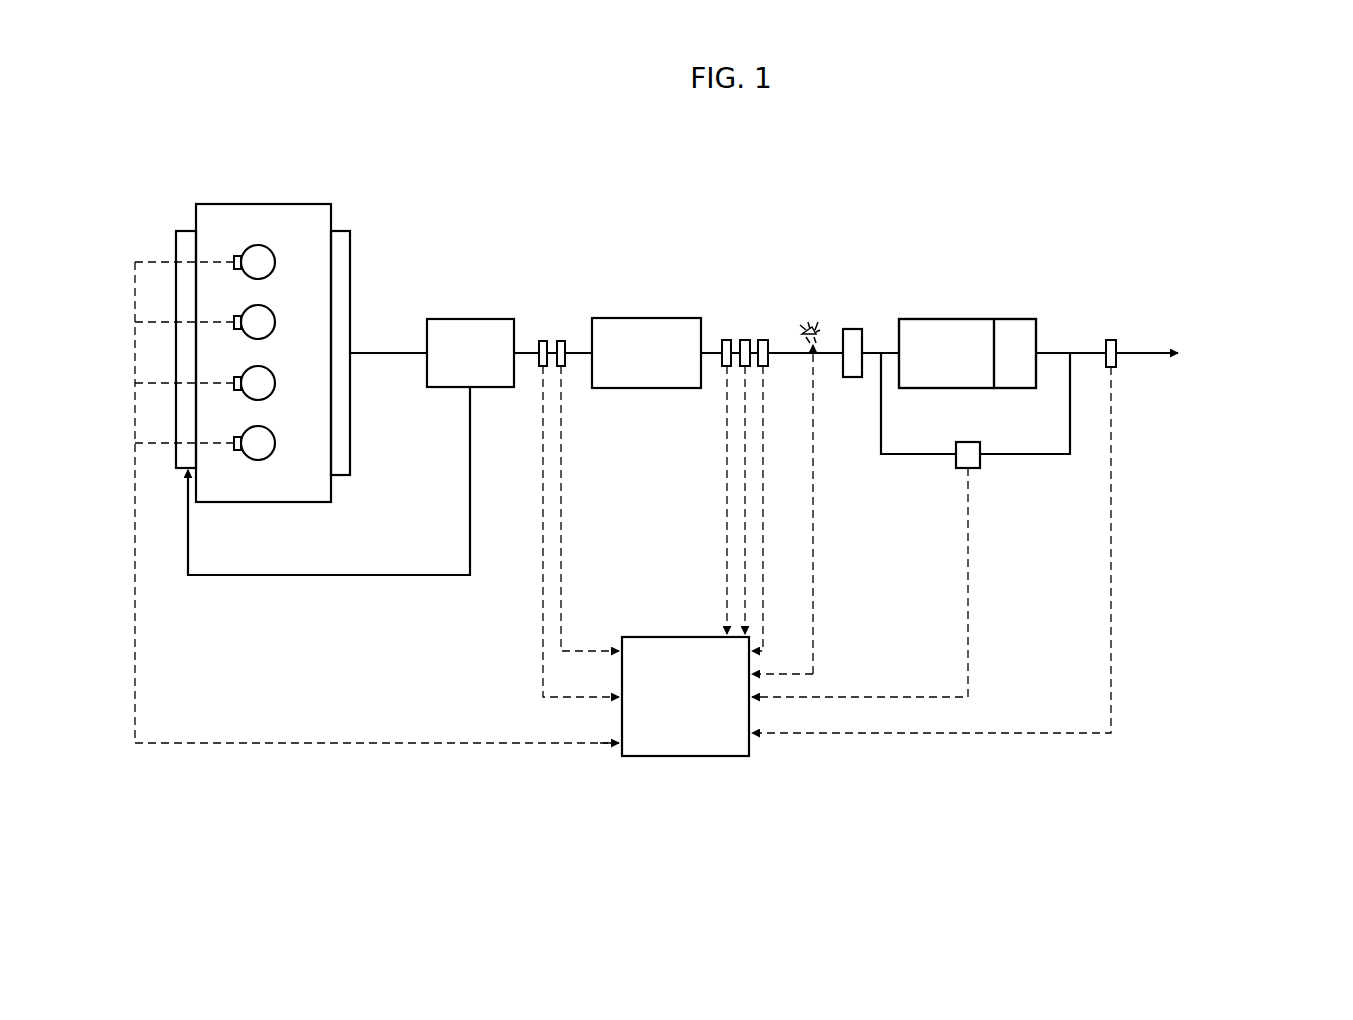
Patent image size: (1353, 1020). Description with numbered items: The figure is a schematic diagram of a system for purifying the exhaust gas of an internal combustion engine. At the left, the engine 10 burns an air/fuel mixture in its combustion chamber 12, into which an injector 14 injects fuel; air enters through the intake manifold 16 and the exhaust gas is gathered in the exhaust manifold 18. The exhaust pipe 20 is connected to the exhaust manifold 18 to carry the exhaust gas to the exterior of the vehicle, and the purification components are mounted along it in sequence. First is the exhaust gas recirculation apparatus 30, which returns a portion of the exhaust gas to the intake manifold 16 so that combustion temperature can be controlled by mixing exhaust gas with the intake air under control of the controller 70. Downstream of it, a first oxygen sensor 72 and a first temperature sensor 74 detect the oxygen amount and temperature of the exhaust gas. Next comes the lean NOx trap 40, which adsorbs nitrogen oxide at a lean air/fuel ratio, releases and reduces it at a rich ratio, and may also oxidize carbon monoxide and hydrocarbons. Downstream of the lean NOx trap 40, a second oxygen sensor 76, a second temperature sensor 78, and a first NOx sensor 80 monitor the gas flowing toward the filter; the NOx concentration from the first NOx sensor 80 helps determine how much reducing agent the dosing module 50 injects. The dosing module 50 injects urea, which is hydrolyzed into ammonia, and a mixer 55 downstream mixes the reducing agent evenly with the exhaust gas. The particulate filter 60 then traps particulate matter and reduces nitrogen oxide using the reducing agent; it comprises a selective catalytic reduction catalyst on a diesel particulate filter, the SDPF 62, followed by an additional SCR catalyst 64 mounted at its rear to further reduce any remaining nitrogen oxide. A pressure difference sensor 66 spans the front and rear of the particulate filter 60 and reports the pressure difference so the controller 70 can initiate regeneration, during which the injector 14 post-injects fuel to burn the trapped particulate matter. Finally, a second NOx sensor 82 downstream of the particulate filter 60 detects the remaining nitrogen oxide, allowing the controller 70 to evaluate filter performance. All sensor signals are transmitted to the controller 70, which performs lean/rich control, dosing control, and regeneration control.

The engine 10 is at (293, 180).
The combustion chamber 12 is at (256, 246).
The injector 14 is at (234, 256).
The intake manifold 16 is at (184, 231).
The exhaust manifold 18 is at (342, 231).
The exhaust pipe 20 is at (388, 352).
The exhaust gas recirculation apparatus 30 is at (450, 319).
The lean NOx trap 40 is at (641, 318).
The dosing module 50 is at (808, 326).
The mixer 55 is at (852, 329).
The particulate filter 60 is at (970, 303).
The selective catalytic reduction catalyst on a diesel particulate filter (SDPF) 62 is at (918, 320).
The additional selective catalytic reduction catalyst 64 is at (1015, 320).
The pressure difference sensor 66 is at (980, 468).
The controller 70 is at (685, 757).
The first oxygen sensor 72 is at (543, 341).
The first temperature sensor 74 is at (561, 341).
The second oxygen sensor 76 is at (723, 340).
The second temperature sensor 78 is at (744, 340).
The first NOx sensor 80 is at (763, 340).
The second NOx sensor 82 is at (1111, 340).